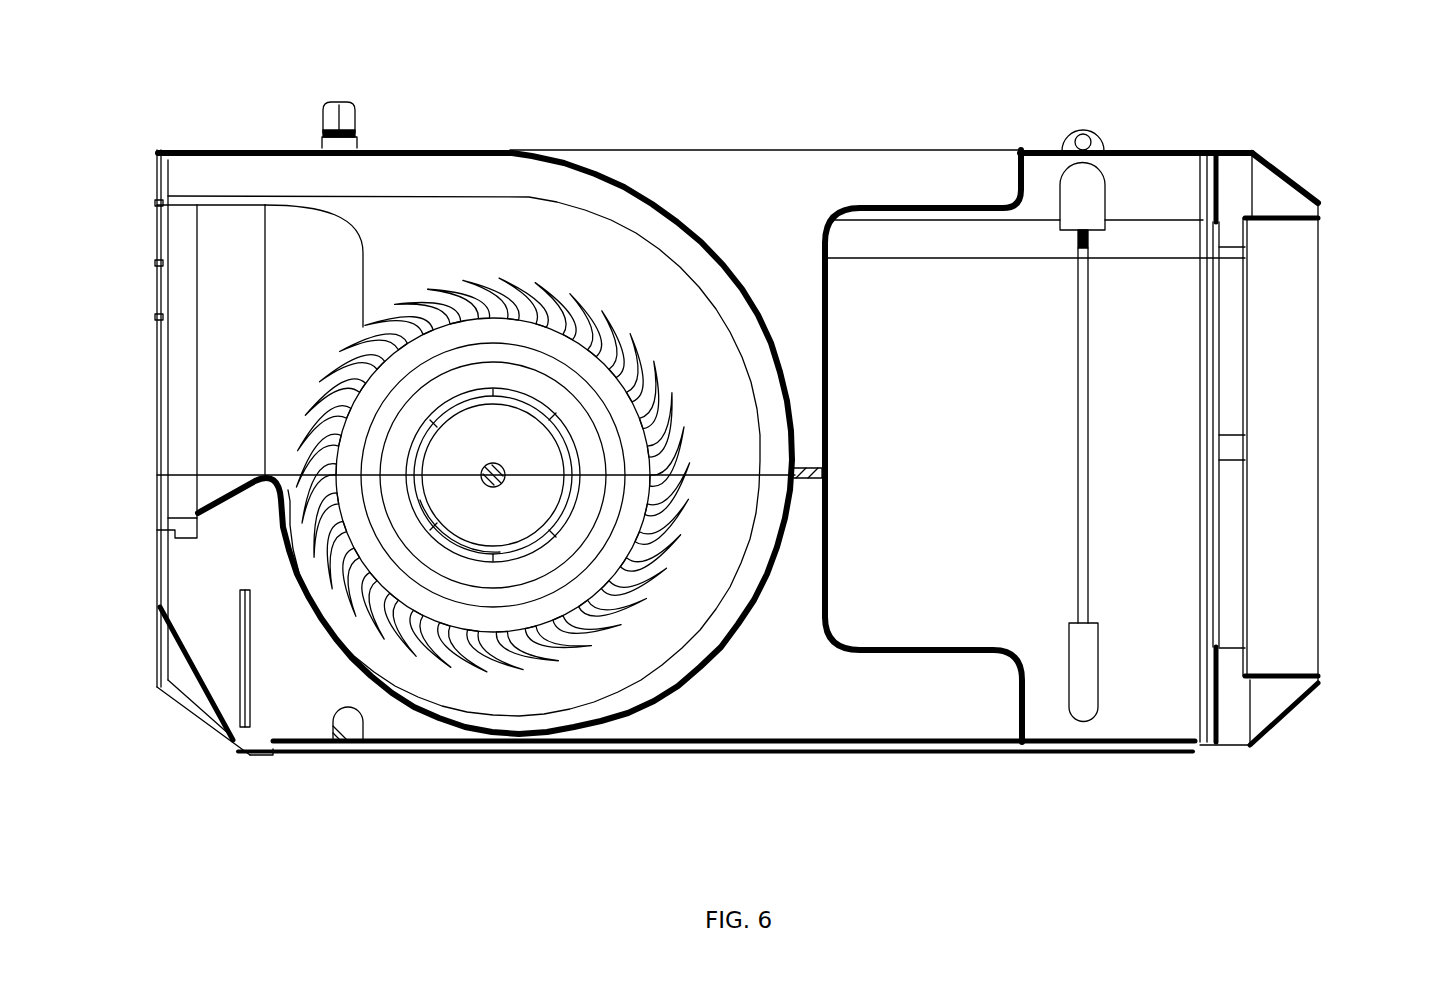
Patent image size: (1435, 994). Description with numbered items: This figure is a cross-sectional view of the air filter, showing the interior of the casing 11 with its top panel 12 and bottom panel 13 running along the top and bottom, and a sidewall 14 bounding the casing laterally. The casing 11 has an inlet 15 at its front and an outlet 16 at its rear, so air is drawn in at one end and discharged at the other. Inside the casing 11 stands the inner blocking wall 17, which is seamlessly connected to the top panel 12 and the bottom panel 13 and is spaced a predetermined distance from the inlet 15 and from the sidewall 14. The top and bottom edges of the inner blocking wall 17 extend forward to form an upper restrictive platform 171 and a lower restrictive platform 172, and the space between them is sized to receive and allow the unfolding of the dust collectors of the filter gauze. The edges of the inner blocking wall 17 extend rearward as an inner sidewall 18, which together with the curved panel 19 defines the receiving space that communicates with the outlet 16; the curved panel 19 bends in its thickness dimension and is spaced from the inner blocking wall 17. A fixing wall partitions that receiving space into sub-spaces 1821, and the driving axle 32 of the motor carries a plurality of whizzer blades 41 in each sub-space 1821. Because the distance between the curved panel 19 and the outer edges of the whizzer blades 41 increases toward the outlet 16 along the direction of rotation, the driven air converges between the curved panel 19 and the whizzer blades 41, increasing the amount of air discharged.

The casing 11 is at (1183, 136).
The top panel 12 is at (1052, 148).
The bottom panel 13 is at (737, 757).
The sidewall 14 is at (1128, 287).
The inlet 15 is at (1322, 440).
The outlet 16 is at (155, 343).
The inner blocking wall 17 is at (830, 563).
The upper restrictive platform 171 is at (962, 207).
The lower restrictive platform 172 is at (890, 650).
The inner sidewall 18 is at (690, 705).
The curved panel 19 is at (655, 207).
The driving axle 32 is at (490, 487).
The whizzer blades 41 is at (412, 633).
The sub-space 1821 is at (533, 688).